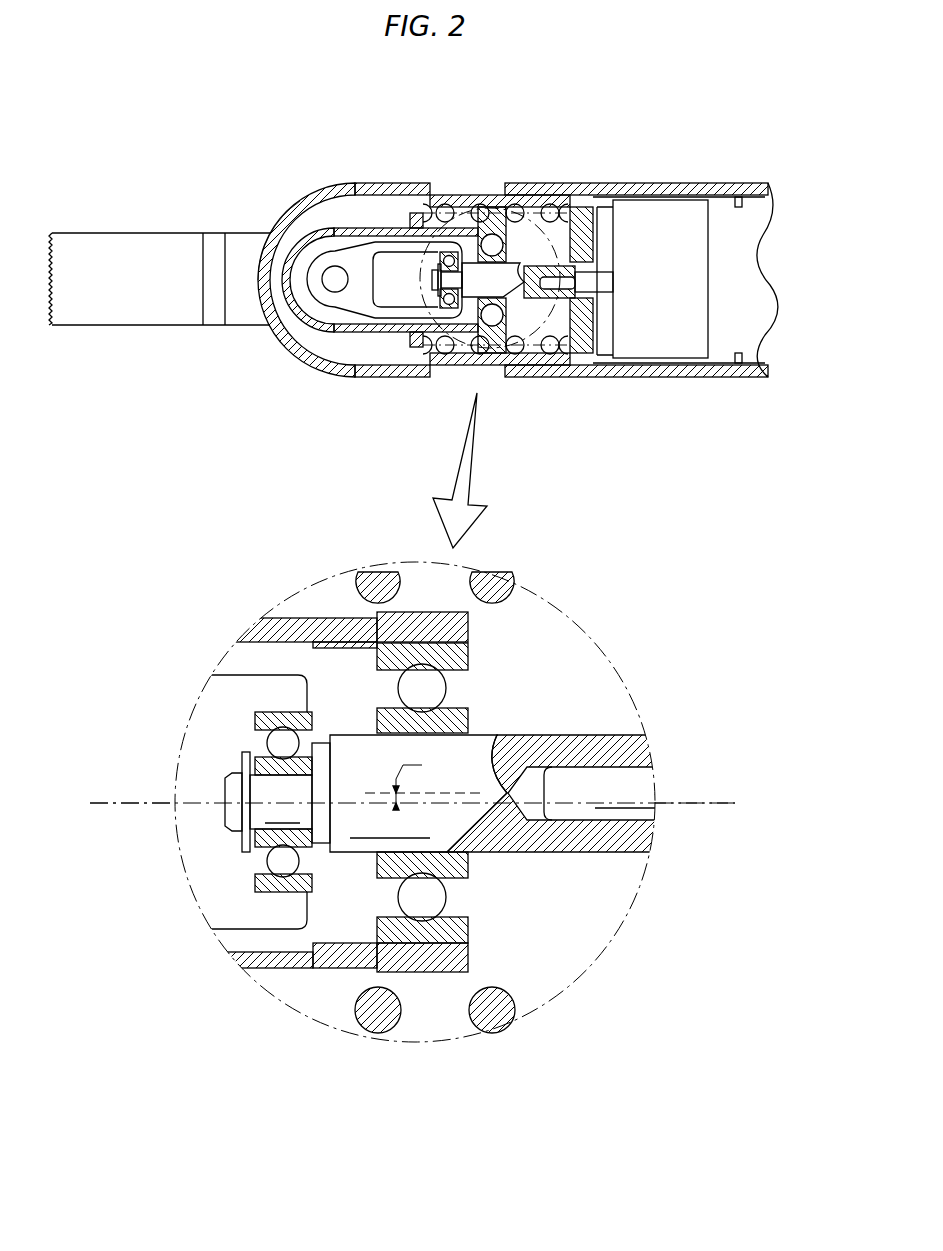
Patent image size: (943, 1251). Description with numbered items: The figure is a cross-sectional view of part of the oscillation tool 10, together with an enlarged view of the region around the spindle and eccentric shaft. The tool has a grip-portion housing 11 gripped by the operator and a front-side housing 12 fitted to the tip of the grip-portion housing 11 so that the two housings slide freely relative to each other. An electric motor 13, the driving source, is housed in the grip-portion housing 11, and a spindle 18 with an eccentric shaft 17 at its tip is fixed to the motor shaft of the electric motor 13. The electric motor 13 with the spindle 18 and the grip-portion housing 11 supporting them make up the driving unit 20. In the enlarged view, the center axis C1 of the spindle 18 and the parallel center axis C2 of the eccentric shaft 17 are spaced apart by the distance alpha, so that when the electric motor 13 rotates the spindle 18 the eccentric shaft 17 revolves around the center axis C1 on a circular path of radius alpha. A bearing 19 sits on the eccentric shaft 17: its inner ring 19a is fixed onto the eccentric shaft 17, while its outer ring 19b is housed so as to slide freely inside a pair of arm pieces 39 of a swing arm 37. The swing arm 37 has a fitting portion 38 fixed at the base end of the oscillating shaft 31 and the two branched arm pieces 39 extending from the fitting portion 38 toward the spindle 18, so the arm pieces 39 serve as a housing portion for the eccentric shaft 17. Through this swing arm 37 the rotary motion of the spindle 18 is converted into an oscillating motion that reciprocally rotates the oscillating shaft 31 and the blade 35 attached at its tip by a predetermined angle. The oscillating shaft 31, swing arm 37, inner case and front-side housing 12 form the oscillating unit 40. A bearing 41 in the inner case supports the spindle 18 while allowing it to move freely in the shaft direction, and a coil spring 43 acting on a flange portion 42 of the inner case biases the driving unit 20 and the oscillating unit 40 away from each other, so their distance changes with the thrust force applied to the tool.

The oscillation tool 10 is at (215, 132).
The grip-portion housing 11 is at (672, 183).
The front-side housing 12 is at (290, 198).
The electric motor 13 is at (690, 305).
The eccentric shaft 17 is at (452, 285).
The spindle 18 is at (515, 292).
The bearing 19 is at (450, 256).
The inner ring 19a is at (258, 750).
The outer ring 19b is at (272, 718).
The driving unit 20 is at (760, 232).
The oscillating shaft 31 is at (330, 287).
The blade 35 is at (133, 232).
The swing arm 37 is at (305, 122).
The fitting portion 38 is at (340, 255).
The arm pieces 39 is at (410, 245).
The oscillating unit 40 is at (258, 236).
The bearing 41 is at (492, 228).
The flange portion 42 is at (410, 342).
The coil spring 43 is at (545, 210).
The center axis of the spindle C1 is at (718, 800).
The center axis of the eccentric shaft C2 is at (110, 801).